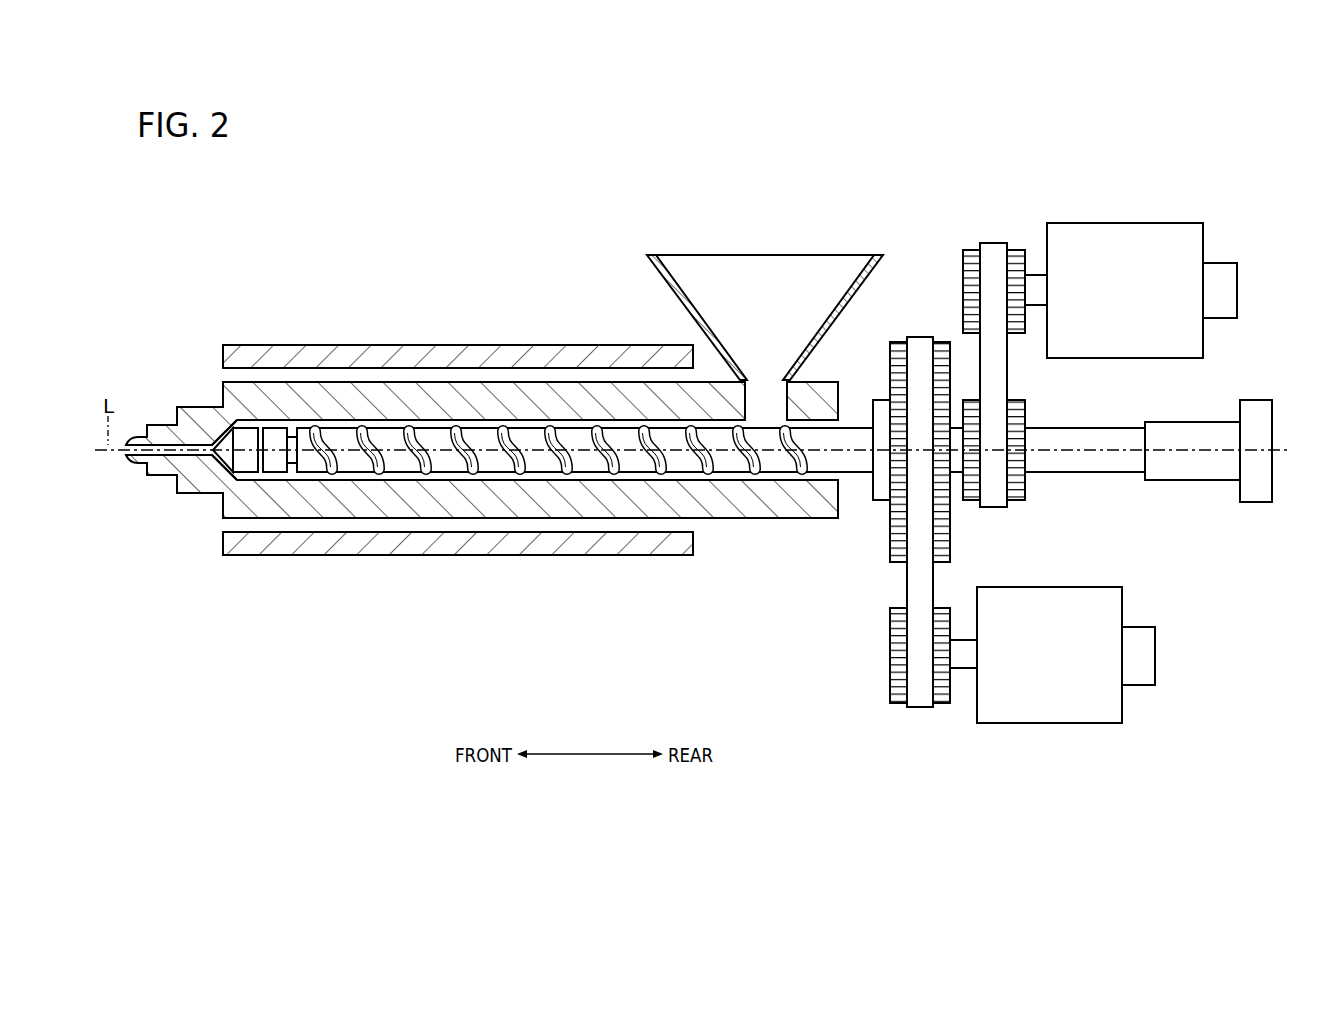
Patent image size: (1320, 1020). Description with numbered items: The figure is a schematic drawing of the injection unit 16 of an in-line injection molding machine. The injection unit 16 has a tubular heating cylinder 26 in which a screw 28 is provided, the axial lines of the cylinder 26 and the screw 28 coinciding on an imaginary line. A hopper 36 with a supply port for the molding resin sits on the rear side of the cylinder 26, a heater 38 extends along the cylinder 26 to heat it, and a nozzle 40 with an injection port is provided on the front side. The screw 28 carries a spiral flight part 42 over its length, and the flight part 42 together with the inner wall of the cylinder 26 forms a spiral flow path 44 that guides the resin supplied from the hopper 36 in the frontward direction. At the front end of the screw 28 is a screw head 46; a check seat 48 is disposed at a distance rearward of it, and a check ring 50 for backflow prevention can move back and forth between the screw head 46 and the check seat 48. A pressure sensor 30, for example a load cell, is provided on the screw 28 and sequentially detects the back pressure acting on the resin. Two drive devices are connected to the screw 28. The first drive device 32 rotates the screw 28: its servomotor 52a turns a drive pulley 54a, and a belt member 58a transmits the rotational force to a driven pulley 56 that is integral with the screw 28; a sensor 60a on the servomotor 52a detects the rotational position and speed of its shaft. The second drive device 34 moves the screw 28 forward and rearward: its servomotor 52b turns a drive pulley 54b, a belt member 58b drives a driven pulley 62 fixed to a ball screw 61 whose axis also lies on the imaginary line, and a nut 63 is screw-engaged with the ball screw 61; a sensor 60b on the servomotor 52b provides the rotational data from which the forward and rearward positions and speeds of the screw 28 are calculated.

The injection unit 16 is at (505, 222).
The heating cylinder 26 is at (412, 395).
The screw 28 is at (458, 462).
The pressure sensor 30 is at (1260, 418).
The first drive device 32 is at (872, 595).
The second drive device 34 is at (936, 245).
The hopper 36 is at (658, 272).
The heater 38 is at (303, 350).
The nozzle 40 is at (131, 436).
The flight part 42 is at (657, 458).
The spiral flow path 44 is at (552, 478).
The screw head 46 is at (228, 460).
The check seat 48 is at (303, 460).
The check ring 50 is at (273, 465).
The servomotor 52a is at (1072, 587).
The servomotor 52b is at (1152, 222).
The drive pulley 54a is at (890, 670).
The drive pulley 54b is at (1016, 250).
The driven pulley 56 is at (890, 536).
The belt member 58a is at (920, 708).
The belt member 58b is at (993, 243).
The sensor 60a is at (1145, 645).
The sensor 60b is at (1223, 283).
The ball screw 61 is at (1104, 465).
The driven pulley 62 is at (1022, 413).
The nut 63 is at (1183, 468).